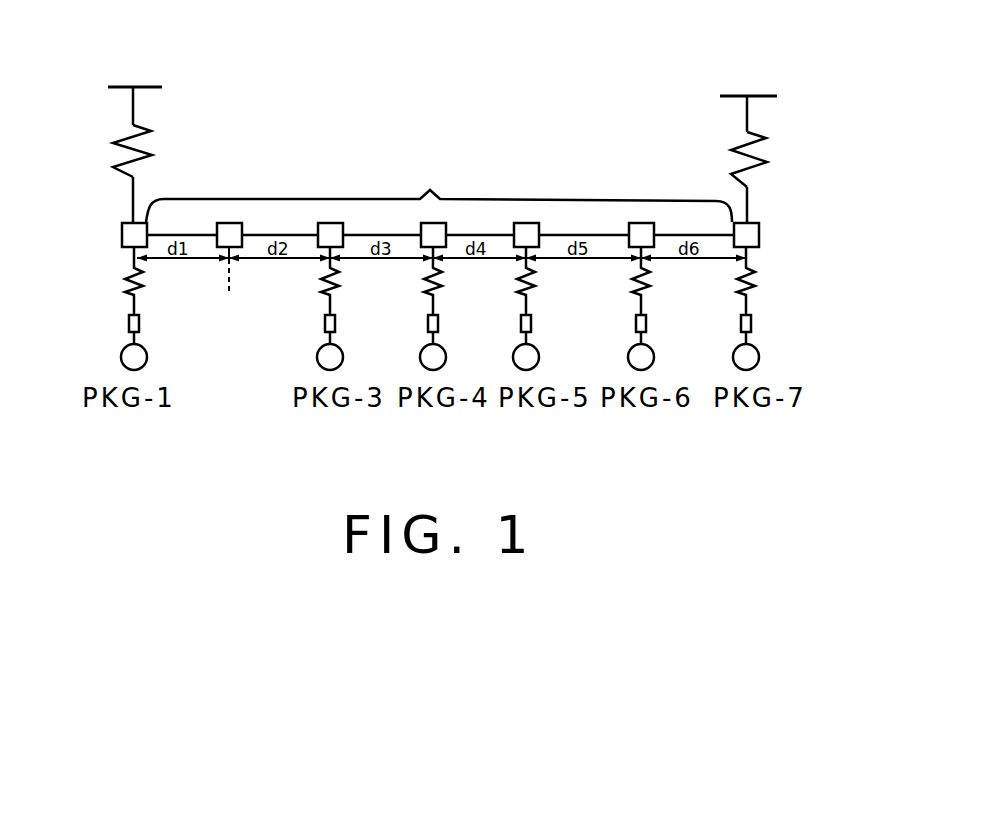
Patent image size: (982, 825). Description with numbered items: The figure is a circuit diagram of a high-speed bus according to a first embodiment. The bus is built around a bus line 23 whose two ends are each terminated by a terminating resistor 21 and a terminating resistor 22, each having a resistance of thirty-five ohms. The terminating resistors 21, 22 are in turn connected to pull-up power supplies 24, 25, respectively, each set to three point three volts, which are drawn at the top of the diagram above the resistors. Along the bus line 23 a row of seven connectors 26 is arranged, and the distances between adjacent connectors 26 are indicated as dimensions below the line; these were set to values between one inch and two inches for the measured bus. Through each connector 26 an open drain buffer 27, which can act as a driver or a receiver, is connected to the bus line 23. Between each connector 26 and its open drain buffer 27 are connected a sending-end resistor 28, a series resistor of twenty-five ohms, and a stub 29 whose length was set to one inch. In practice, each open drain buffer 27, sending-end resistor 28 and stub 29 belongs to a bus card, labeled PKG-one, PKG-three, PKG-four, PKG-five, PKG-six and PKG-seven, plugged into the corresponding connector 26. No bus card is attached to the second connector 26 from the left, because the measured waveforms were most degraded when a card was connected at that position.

The terminating resistor 21 is at (149, 142).
The terminating resistor 22 is at (767, 146).
The bus line 23 is at (439, 190).
The pull-up power supply 24 is at (128, 86).
The pull-up power supply 25 is at (760, 94).
The connector 26 is at (121, 238).
The open drain buffer 27 is at (121, 362).
The sending-end resistor 28 is at (122, 286).
The stub 29 is at (129, 325).